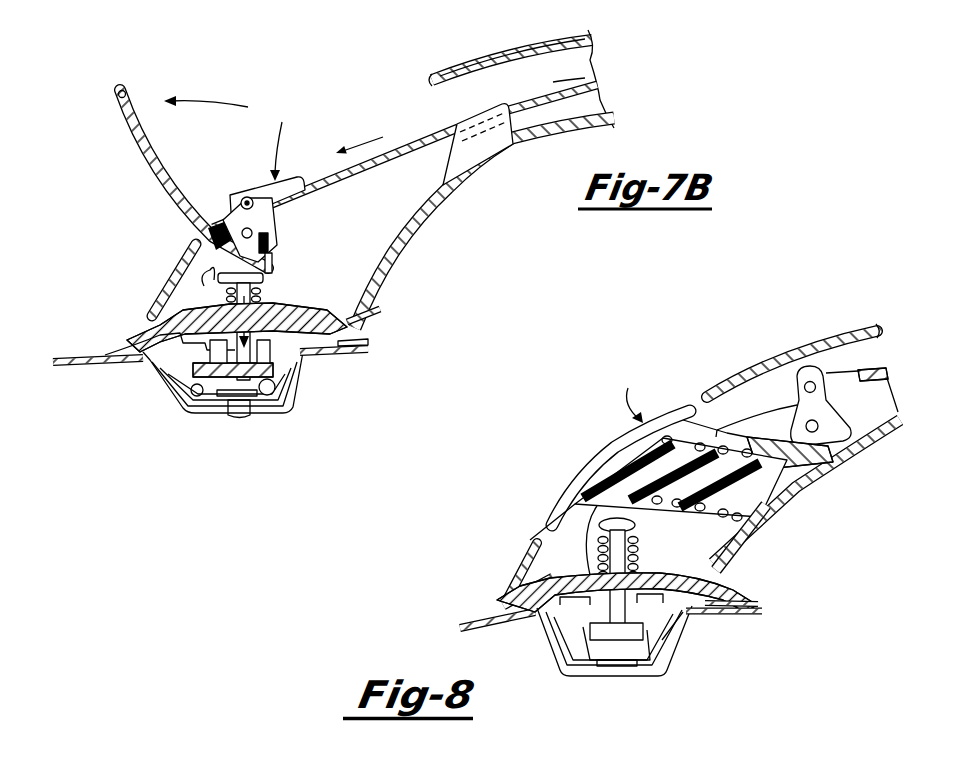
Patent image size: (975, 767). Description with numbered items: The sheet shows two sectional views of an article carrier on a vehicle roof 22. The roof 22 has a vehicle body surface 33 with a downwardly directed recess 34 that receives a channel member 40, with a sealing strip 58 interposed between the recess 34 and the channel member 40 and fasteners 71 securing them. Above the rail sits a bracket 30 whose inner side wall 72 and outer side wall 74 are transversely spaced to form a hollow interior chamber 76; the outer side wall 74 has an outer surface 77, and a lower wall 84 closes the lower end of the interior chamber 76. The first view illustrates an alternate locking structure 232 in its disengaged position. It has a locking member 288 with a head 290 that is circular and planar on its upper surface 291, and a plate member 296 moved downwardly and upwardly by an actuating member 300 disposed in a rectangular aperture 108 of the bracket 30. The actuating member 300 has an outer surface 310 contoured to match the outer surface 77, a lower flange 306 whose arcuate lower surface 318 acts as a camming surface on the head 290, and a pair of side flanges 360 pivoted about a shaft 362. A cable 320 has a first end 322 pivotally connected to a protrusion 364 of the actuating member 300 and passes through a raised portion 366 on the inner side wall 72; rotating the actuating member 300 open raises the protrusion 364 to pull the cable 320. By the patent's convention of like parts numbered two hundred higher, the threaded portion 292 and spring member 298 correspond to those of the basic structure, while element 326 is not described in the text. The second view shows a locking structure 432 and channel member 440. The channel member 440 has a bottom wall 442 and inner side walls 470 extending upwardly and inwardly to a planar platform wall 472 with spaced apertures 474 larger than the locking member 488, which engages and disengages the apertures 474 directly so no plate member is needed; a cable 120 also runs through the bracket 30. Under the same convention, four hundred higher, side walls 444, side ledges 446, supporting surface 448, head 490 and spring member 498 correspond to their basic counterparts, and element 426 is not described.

In FIG. 7B, the roof 22 is at (363, 350).
In FIG. 8, the roof 22 is at (750, 608).
In FIG. 7B, the bracket 30 is at (590, 35).
In FIG. 8, the bracket 30 is at (853, 335).
In FIG. 7B, the vehicle body surface 33 is at (352, 341).
In FIG. 8, the vehicle body surface 33 is at (748, 601).
In FIG. 7B, the recess 34 is at (198, 413).
In FIG. 8, the recess 34 is at (640, 680).
In FIG. 7B, the channel member 40 is at (173, 384).
In FIG. 7B, the sealing strip 58 is at (303, 390).
In FIG. 8, the sealing strip 58 is at (672, 655).
In FIG. 7B, the fasteners 71 is at (243, 416).
In FIG. 8, the fasteners 71 is at (612, 670).
In FIG. 7B, the inner side wall 72 is at (413, 223).
In FIG. 8, the inner side wall 72 is at (851, 448).
In FIG. 7B, the outer side wall 74 is at (500, 62).
In FIG. 8, the outer side wall 74 is at (788, 352).
In FIG. 7B, the interior chamber 76 is at (550, 82).
In FIG. 7B, the outer surface 77 is at (462, 68).
In FIG. 7B, the lower wall 84 is at (160, 325).
In FIG. 7B, the rectangular aperture 108 is at (426, 82).
In FIG. 8, the rectangular aperture 108 is at (537, 542).
In FIG. 8, the cable 120 is at (876, 372).
In FIG. 7B, the locking structure 232 is at (287, 139).
In FIG. 7B, the locking member 288 is at (300, 366).
In FIG. 7B, the head 290 is at (263, 278).
In FIG. 7B, the upper surface 291 is at (195, 282).
In FIG. 7B, the roller 292 is at (269, 401).
In FIG. 7B, the plate member 296 is at (292, 403).
In FIG. 7B, the base plate 298 is at (346, 313).
In FIG. 7B, the actuating member 300 is at (143, 144).
In FIG. 7B, the lower flange 306 is at (268, 240).
In FIG. 7B, the outer surface 310 is at (152, 170).
In FIG. 7B, the lower surface 318 is at (272, 257).
In FIG. 7B, the cable 320 is at (405, 142).
In FIG. 7B, the first end 322 is at (292, 183).
In FIG. 7B, the link plate 326 is at (246, 197).
In FIG. 7B, the side flanges 360 is at (256, 206).
In FIG. 7B, the shaft 362 is at (255, 233).
In FIG. 7B, the protrusion 364 is at (228, 216).
In FIG. 7B, the raised portion 366 is at (478, 140).
In FIG. 8, the body edge 426 is at (737, 427).
In FIG. 8, the locking structure 432 is at (690, 446).
In FIG. 8, the channel member 440 is at (553, 640).
In FIG. 8, the bottom wall 442 is at (582, 672).
In FIG. 8, the flange 444 is at (527, 627).
In FIG. 8, the wall 446 is at (517, 597).
In FIG. 8, the striped plate 448 is at (585, 598).
In FIG. 8, the inner side walls 470 is at (565, 660).
In FIG. 8, the platform wall 472 is at (592, 680).
In FIG. 8, the apertures 474 is at (566, 506).
In FIG. 8, the locking member 488 is at (639, 550).
In FIG. 8, the head 490 is at (636, 526).
In FIG. 8, the spring rod 498 is at (639, 566).